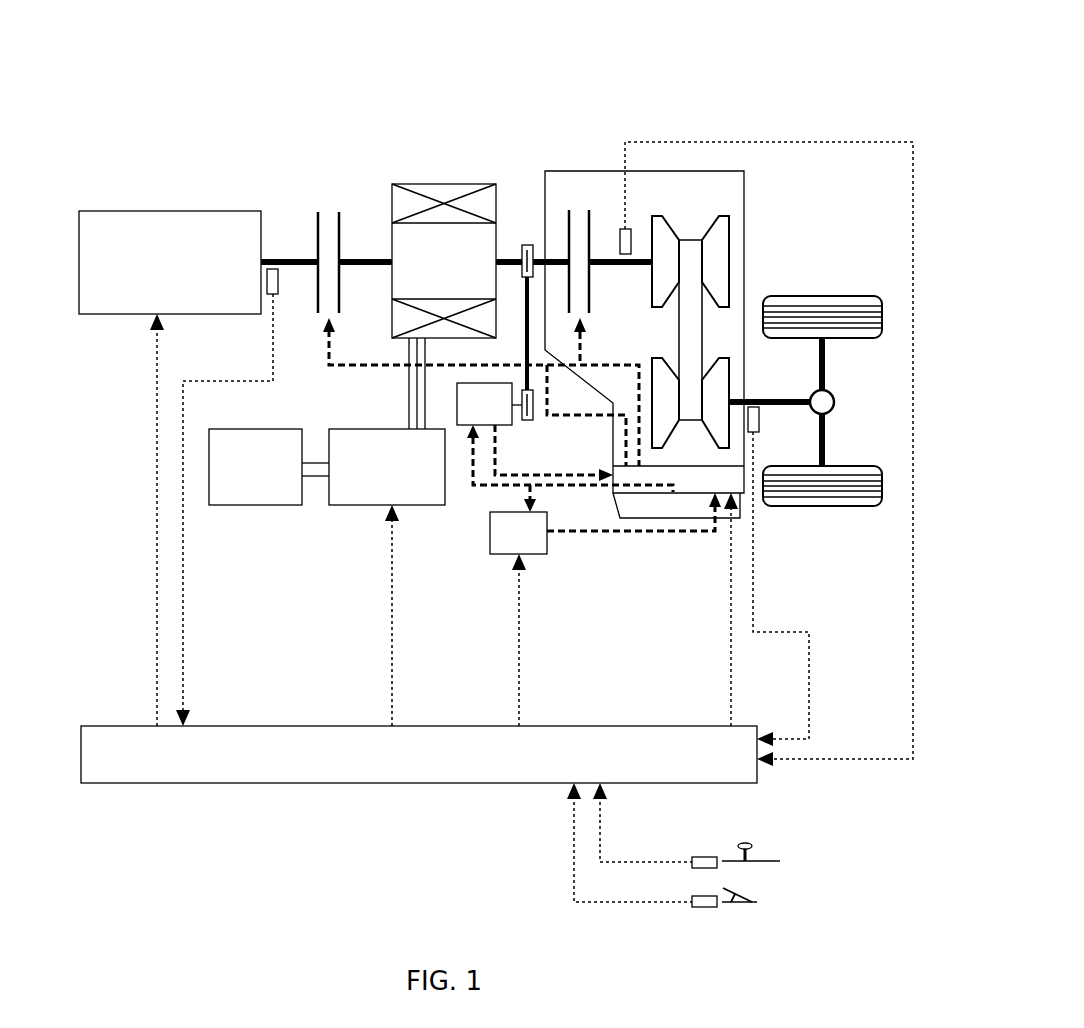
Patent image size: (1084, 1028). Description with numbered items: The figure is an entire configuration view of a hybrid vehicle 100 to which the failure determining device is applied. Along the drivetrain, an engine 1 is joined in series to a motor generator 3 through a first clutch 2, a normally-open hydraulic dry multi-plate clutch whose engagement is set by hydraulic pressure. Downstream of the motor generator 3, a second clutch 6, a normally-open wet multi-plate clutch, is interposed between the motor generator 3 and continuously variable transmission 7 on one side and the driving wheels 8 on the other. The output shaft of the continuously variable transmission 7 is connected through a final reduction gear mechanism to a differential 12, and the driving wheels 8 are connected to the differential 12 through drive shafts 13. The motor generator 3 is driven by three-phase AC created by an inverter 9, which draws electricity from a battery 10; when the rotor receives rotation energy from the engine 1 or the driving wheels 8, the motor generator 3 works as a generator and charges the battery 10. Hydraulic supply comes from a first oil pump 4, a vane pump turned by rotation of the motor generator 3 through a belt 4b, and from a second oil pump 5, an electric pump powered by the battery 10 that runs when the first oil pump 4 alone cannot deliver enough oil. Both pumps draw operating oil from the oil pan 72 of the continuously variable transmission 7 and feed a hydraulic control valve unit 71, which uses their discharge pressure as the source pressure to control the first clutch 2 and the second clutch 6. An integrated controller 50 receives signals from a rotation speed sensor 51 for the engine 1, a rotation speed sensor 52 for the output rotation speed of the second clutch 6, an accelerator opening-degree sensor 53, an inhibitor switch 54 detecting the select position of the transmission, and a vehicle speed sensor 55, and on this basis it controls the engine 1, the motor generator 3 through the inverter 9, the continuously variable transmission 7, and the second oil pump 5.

The hybrid vehicle 100 is at (697, 69).
The engine 1 is at (205, 223).
The first clutch 2 is at (317, 214).
The motor generator 3 is at (445, 190).
The first oil pump 4 is at (497, 418).
The belt 4b is at (527, 245).
The second oil pump 5 is at (500, 546).
The second clutch 6 is at (567, 227).
The continuously variable transmission 7 is at (720, 258).
The driving wheels 8 is at (825, 302).
The inverter 9 is at (357, 498).
The battery 10 is at (260, 498).
The differential 12 is at (833, 406).
The drive shafts 13 is at (826, 357).
The integrated controller 50 is at (408, 775).
The rotation speed sensor 51 is at (273, 284).
The rotation speed sensor 52 is at (623, 231).
The accelerator opening-degree sensor 53 is at (706, 908).
The inhibitor switch 54 is at (704, 857).
The vehicle speed sensor 55 is at (758, 420).
The hydraulic control valve unit 71 is at (624, 477).
The oil pan 72 is at (643, 519).